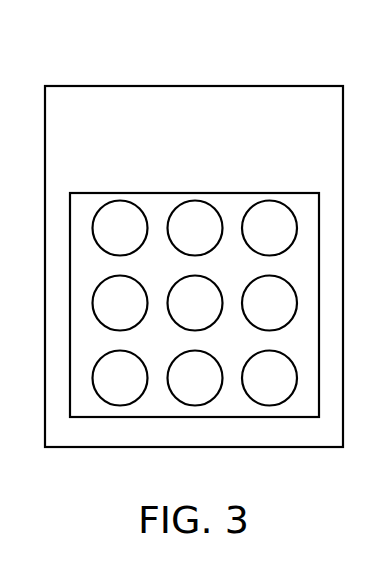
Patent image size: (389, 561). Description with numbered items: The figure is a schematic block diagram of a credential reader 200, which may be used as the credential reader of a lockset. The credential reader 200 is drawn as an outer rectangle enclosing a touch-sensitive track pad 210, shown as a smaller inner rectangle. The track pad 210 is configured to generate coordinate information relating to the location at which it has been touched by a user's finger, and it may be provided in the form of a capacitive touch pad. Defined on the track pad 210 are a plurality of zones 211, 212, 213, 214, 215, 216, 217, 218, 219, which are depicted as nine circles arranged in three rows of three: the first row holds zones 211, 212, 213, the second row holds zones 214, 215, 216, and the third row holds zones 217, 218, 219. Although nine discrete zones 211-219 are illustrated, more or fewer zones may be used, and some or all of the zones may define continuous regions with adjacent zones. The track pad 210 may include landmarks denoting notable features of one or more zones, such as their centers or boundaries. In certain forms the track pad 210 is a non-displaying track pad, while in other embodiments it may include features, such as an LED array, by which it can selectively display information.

The credential reader 200 is at (113, 71).
The touch-sensitive track pad 210 is at (103, 193).
The zone 211 is at (120, 228).
The zone 212 is at (195, 228).
The zone 213 is at (269, 228).
The zone 214 is at (120, 303).
The zone 215 is at (195, 303).
The zone 216 is at (269, 303).
The zone 217 is at (120, 378).
The zone 218 is at (195, 378).
The zone 219 is at (269, 378).